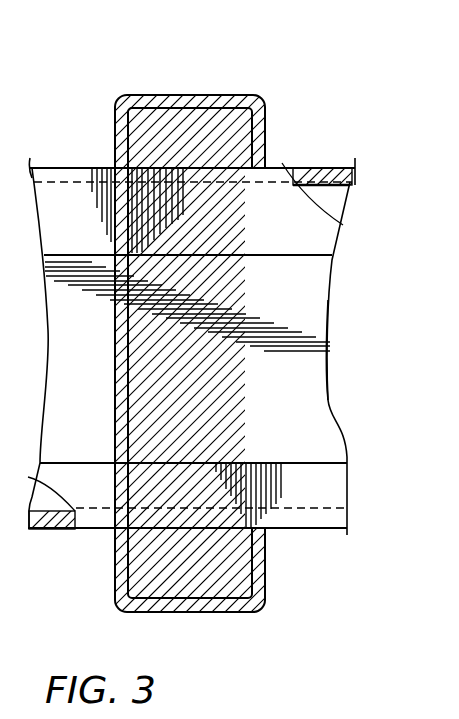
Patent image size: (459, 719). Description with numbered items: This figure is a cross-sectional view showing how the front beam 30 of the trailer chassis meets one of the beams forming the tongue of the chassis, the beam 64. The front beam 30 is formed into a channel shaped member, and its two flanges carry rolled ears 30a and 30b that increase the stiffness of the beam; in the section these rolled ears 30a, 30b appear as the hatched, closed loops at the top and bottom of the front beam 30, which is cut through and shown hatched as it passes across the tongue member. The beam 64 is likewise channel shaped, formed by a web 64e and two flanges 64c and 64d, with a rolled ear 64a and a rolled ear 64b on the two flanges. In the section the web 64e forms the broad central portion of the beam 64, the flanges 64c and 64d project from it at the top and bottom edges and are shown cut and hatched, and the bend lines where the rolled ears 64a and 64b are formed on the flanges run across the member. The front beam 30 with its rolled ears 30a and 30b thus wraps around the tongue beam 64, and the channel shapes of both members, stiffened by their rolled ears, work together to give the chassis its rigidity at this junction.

The front beam 30 is at (123, 76).
The rolled ear 30a is at (265, 131).
The rolled ear 30b is at (262, 555).
The beam 64 is at (57, 163).
The rolled ear 64a is at (323, 234).
The rolled ear 64b is at (330, 476).
The flange 64c is at (330, 168).
The flange 64d is at (77, 528).
The web 64e is at (310, 377).